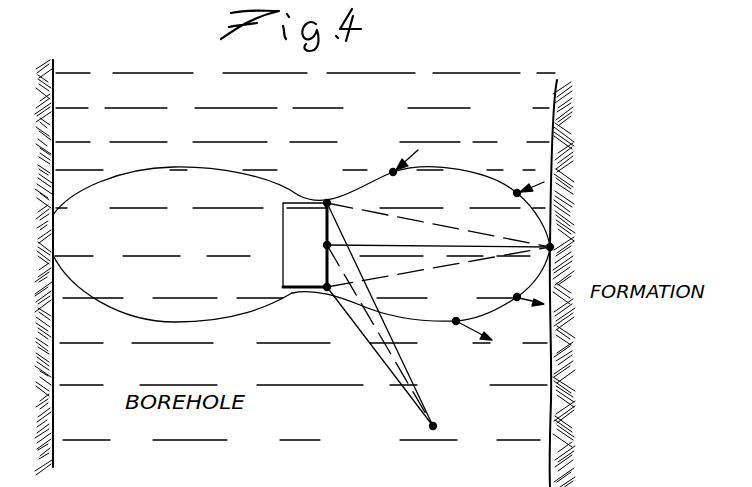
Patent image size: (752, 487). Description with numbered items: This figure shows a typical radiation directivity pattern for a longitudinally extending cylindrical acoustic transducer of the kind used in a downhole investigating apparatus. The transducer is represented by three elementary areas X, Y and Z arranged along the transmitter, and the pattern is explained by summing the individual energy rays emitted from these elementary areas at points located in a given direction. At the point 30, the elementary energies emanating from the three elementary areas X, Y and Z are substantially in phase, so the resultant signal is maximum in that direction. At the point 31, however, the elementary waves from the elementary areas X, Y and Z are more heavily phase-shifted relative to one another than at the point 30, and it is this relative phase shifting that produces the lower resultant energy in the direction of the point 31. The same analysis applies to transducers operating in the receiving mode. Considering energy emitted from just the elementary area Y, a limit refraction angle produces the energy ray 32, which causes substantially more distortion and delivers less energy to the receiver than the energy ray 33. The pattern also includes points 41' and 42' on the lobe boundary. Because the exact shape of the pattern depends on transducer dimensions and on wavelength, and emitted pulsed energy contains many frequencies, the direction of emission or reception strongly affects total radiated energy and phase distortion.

The point 30 is at (550, 247).
The point 31 is at (433, 426).
The energy ray 32 is at (460, 325).
The energy ray 33 is at (518, 301).
The point on upper lobe boundary 41' is at (390, 137).
The point on upper lobe boundary near wall 42' is at (519, 150).
The elementary area X is at (327, 201).
The elementary area Y is at (327, 245).
The elementary area Z is at (327, 287).